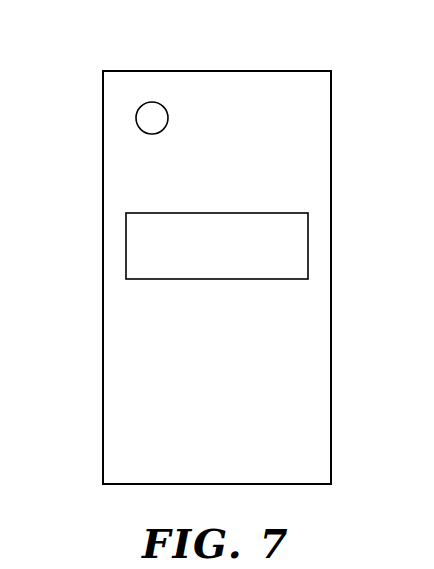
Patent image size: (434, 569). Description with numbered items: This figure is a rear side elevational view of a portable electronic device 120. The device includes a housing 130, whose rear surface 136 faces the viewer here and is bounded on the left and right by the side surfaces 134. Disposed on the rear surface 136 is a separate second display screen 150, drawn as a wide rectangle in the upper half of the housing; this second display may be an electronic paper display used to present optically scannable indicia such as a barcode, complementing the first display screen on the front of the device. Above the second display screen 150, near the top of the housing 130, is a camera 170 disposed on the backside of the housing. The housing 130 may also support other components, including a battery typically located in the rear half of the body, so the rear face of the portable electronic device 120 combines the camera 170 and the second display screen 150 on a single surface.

The portable electronic device 120 is at (97, 50).
The camera 170 is at (142, 118).
The housing 130 is at (101, 174).
The second display screen 150 is at (137, 247).
The rear surface 136 is at (108, 315).
The side surfaces 134 is at (103, 394).